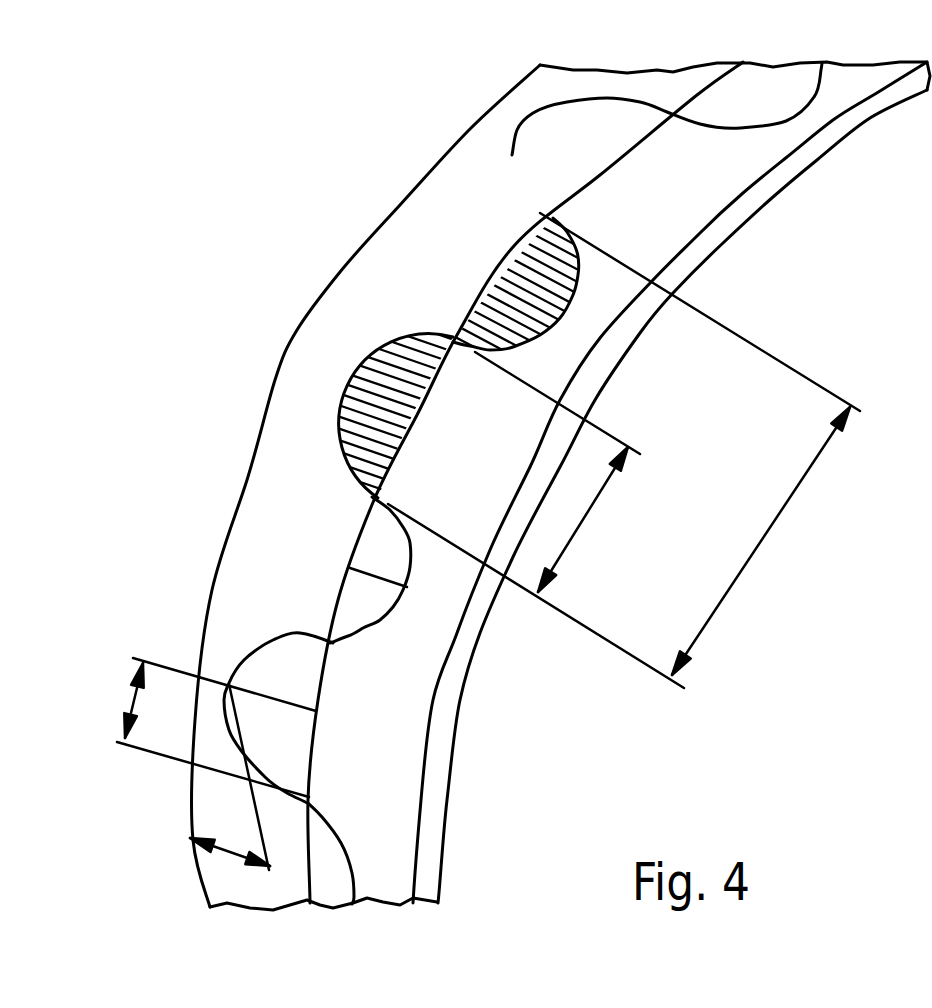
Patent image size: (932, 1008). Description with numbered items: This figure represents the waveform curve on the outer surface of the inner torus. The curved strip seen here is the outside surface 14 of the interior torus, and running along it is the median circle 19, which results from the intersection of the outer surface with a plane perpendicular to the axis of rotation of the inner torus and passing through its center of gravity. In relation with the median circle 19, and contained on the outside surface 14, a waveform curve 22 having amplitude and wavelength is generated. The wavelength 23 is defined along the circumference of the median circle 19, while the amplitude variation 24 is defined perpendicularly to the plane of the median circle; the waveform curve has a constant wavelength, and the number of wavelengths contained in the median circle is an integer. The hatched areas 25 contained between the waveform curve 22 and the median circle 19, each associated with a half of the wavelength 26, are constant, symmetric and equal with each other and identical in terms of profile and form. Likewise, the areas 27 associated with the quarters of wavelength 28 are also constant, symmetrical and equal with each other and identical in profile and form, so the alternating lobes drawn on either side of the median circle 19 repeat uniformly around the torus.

The outside surface 14 is at (273, 507).
The median circle 19 is at (697, 92).
The waveform curve 22 is at (512, 155).
The wavelength 23 is at (757, 547).
The amplitude variation 24 is at (190, 838).
The areas 25 is at (387, 370).
The half of the wavelength 26 is at (580, 525).
The areas 27 is at (263, 660).
The quarters of wavelength 28 is at (137, 700).